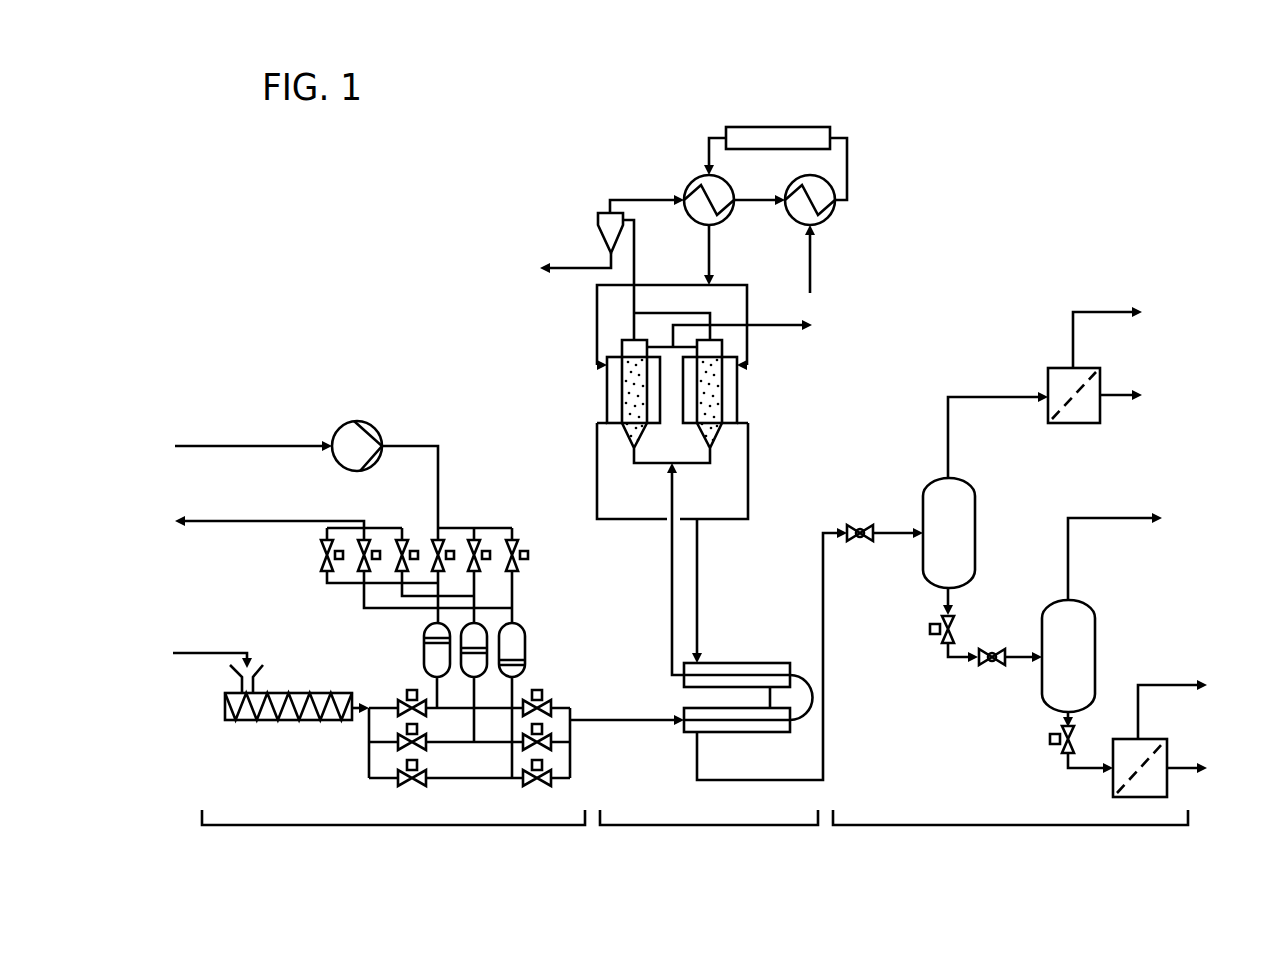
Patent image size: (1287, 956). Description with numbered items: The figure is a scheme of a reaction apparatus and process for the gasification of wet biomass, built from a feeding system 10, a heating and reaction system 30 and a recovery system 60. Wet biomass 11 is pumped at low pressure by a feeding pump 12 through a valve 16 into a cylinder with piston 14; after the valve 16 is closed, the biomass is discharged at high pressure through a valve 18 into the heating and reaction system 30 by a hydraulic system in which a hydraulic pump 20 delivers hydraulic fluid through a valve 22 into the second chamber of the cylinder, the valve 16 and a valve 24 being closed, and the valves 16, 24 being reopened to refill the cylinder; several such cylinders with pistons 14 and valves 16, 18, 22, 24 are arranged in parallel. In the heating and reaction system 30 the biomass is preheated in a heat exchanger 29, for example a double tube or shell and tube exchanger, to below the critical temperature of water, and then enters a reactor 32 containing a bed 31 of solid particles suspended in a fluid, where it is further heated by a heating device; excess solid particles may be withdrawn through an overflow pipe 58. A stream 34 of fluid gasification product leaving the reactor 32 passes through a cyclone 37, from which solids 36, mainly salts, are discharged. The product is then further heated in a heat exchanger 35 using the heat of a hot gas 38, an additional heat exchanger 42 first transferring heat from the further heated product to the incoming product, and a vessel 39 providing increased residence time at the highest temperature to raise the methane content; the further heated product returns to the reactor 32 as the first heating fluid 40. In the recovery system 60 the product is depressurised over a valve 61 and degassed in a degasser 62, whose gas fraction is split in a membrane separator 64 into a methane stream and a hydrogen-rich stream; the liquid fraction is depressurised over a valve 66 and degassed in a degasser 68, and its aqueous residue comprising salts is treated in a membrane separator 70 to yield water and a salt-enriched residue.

The feeding system 10 is at (393, 837).
The wet biomass 11 is at (216, 643).
The feeding pump 12 is at (277, 723).
The cylinder with piston 14 is at (418, 639).
The valve 16 is at (398, 685).
The valve 18 is at (550, 688).
The hydraulic pump 20 is at (343, 415).
The valve 22 is at (452, 540).
The valve 24 is at (320, 555).
The heat exchanger 29 is at (737, 657).
The heating and reaction system 30 is at (709, 837).
The bed of solid particles 31 is at (632, 390).
The reactor 32 is at (605, 388).
The stream of fluid gasification product 34 is at (628, 328).
The heat exchanger 35 is at (840, 217).
The solids 36 is at (568, 262).
The cyclone 37 is at (592, 217).
The hot gas 38 is at (817, 272).
The vessel 39 is at (792, 120).
The first heating fluid 40 is at (593, 350).
The additional heat exchanger 42 is at (737, 223).
The overflow pipe 58 is at (664, 342).
The recovery system 60 is at (1010, 837).
The valve 61 is at (860, 520).
The degasser 62 is at (980, 517).
The membrane separator 64 is at (1080, 427).
The valve 66 is at (992, 672).
The degasser 68 is at (1097, 607).
The membrane separator 70 is at (1173, 743).